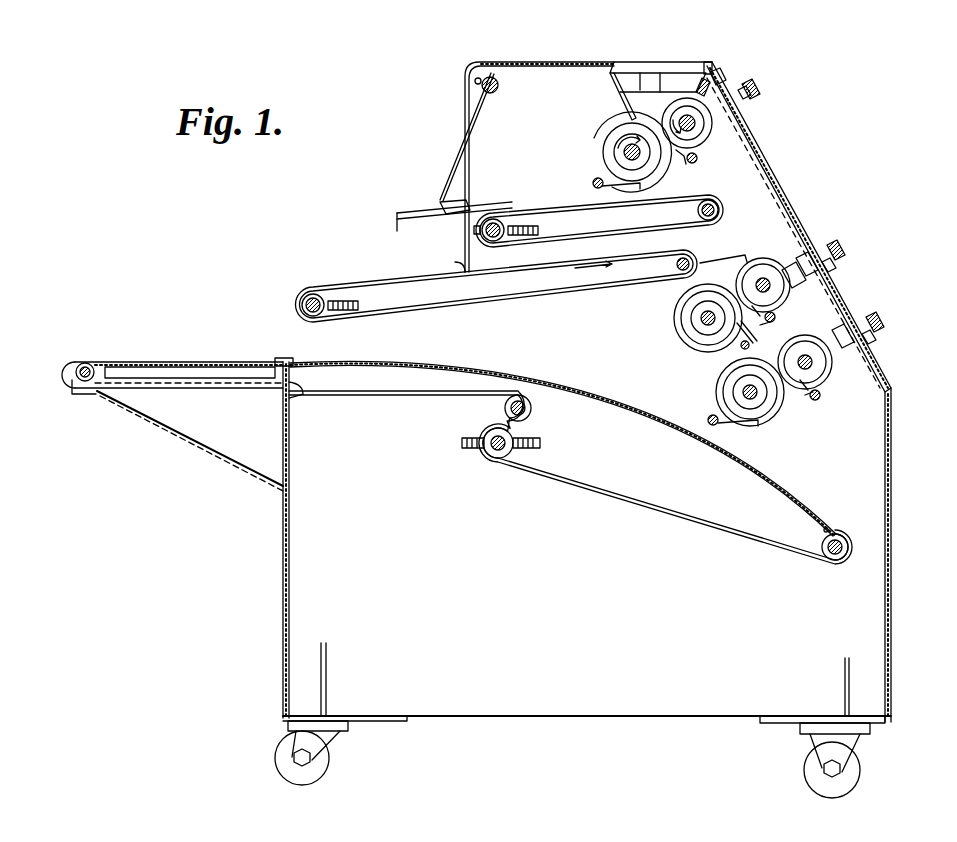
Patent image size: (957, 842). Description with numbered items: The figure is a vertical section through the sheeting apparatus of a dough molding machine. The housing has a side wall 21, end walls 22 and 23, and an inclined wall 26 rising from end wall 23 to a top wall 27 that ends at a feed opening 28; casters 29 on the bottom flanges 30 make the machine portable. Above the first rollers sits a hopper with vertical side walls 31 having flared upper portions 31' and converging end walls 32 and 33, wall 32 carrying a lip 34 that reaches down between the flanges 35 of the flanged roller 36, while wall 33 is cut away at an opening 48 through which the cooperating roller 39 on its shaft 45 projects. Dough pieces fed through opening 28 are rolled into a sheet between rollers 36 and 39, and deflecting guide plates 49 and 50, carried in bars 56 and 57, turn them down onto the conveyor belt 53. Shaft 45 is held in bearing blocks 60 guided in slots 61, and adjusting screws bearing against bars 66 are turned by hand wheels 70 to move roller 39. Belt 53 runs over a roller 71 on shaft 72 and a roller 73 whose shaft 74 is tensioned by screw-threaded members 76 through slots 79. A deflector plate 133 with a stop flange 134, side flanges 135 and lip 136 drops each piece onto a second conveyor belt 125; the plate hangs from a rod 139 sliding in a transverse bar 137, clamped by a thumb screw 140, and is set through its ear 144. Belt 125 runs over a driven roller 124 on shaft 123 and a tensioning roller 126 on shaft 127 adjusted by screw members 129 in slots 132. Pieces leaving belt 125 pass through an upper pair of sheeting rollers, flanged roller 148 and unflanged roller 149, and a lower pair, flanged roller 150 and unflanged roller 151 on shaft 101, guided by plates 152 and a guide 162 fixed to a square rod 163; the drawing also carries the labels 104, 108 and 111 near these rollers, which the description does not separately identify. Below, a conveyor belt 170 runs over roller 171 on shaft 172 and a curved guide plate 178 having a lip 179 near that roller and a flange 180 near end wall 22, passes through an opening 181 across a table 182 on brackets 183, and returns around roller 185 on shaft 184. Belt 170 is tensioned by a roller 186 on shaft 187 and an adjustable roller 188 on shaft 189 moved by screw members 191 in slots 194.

The side wall 21 is at (560, 718).
The end wall 22 is at (283, 588).
The end wall 23 is at (893, 552).
The inclined wall portion 26 is at (800, 192).
The top wall 27 is at (545, 67).
The feed opening 28 is at (671, 64).
The casters 29 is at (330, 768).
The bottom flanges 30 is at (380, 721).
The hopper side walls 31 is at (652, 63).
The outwardly flared upper end portions 31' is at (628, 62).
The hopper end wall 32 is at (619, 92).
The hopper end wall 33 is at (708, 84).
The vertical lip portion 34 is at (600, 124).
The flanges 35 is at (604, 140).
The flanged roller 36 is at (624, 152).
The roller 39 is at (706, 131).
The shaft 45 is at (692, 122).
The opening 48 is at (709, 61).
The dough deflecting guide plate 49 is at (606, 186).
The dough deflecting guide plate 50 is at (684, 162).
The conveyor belt 53 is at (640, 215).
The bar 56 is at (594, 182).
The bar 57 is at (698, 158).
The adjustable bearing blocks 60 is at (799, 262).
The slots 61 is at (722, 80).
The bars 66 is at (765, 163).
The knurled heads or hand wheels 70 is at (756, 86).
The roller 71 is at (716, 200).
The shaft 72 is at (714, 210).
The roller 73 is at (500, 222).
The shaft 74 is at (478, 232).
The screw-threaded members 76 is at (539, 229).
The slots 79 is at (545, 237).
The shaft 101 is at (812, 366).
The bearing block 104 is at (810, 282).
The roller shaft 108 is at (760, 400).
The roller shaft 111 is at (700, 318).
The shaft 123 is at (722, 262).
The roller 124 is at (676, 271).
The conveyor belt 125 is at (512, 270).
The roller 126 is at (322, 320).
The shaft 127 is at (316, 296).
The screw-threaded members 129 is at (362, 305).
The slots 132 is at (347, 298).
The deflector plate 133 is at (420, 212).
The depending flange 134 is at (396, 224).
The side flanges 135 is at (436, 218).
The upwardly obliquely extending lip 136 is at (500, 213).
The transversely extending bar or rod 137 is at (496, 89).
The rod-like plate supporting member 139 is at (470, 135).
The thumb screw 140 is at (475, 81).
The upstanding ear 144 is at (456, 210).
The flanged roller 148 is at (688, 340).
The unflanged roller 149 is at (765, 262).
The flanged roller 150 is at (718, 398).
The unflanged roller 151 is at (823, 382).
The guide plates 152 is at (728, 260).
The guide 162 is at (718, 352).
The rod-like member 163 is at (740, 346).
The conveyor belt 170 is at (352, 395).
The roller 171 is at (846, 541).
The shaft 172 is at (840, 553).
The curved guide plate 178 is at (670, 441).
The depending lip 179 is at (824, 530).
The lip or flange 180 is at (293, 393).
The opening 181 is at (282, 360).
The table 182 is at (190, 362).
The brackets 183 is at (185, 432).
The shaft 184 is at (86, 364).
The roller 185 is at (86, 390).
The roller 186 is at (532, 409).
The shaft 187 is at (511, 408).
The adjustable roller 188 is at (500, 457).
The shaft 189 is at (492, 449).
The screw-threaded members 191 is at (541, 444).
The slots 194 is at (462, 441).